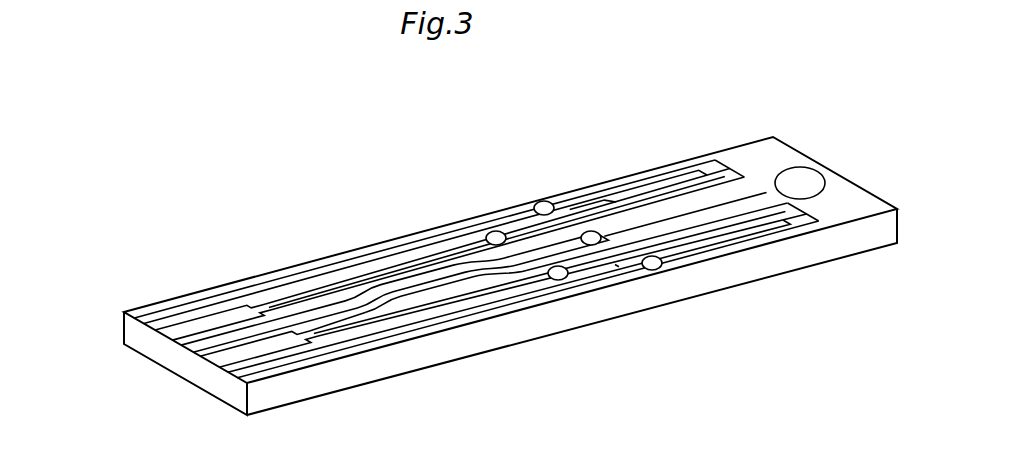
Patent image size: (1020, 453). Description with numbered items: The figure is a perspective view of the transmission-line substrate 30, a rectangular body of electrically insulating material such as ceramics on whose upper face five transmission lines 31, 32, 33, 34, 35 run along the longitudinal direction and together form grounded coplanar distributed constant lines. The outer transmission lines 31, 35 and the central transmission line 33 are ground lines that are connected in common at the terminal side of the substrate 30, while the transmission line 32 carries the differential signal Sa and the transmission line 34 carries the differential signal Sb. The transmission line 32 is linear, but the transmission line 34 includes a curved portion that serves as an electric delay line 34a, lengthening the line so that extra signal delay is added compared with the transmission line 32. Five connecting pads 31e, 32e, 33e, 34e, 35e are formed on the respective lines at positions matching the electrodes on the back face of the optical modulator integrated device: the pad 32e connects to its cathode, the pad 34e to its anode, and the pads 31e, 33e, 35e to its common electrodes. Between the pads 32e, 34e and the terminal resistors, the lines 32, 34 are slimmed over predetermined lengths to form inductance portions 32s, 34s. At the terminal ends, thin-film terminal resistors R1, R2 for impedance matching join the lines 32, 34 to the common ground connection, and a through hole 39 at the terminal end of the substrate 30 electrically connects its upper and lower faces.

The transmission-line substrate 30 is at (335, 150).
The transmission line 31 is at (335, 257).
The connecting pad 31e is at (543, 201).
The transmission line 32 is at (288, 292).
The connecting pad 32e is at (493, 231).
The inductance portion 32s is at (575, 213).
The transmission line 33 is at (363, 297).
The connecting pad 33e is at (594, 245).
The transmission line 34 is at (360, 322).
The electric delay line 34a is at (430, 297).
The connecting pad 34e is at (561, 280).
The inductance portion 34s is at (617, 262).
The transmission line 35 is at (405, 338).
The connecting pad 35e is at (658, 269).
The through hole 39 is at (806, 184).
The terminal resistor R1 is at (718, 177).
The terminal resistor R2 is at (780, 215).